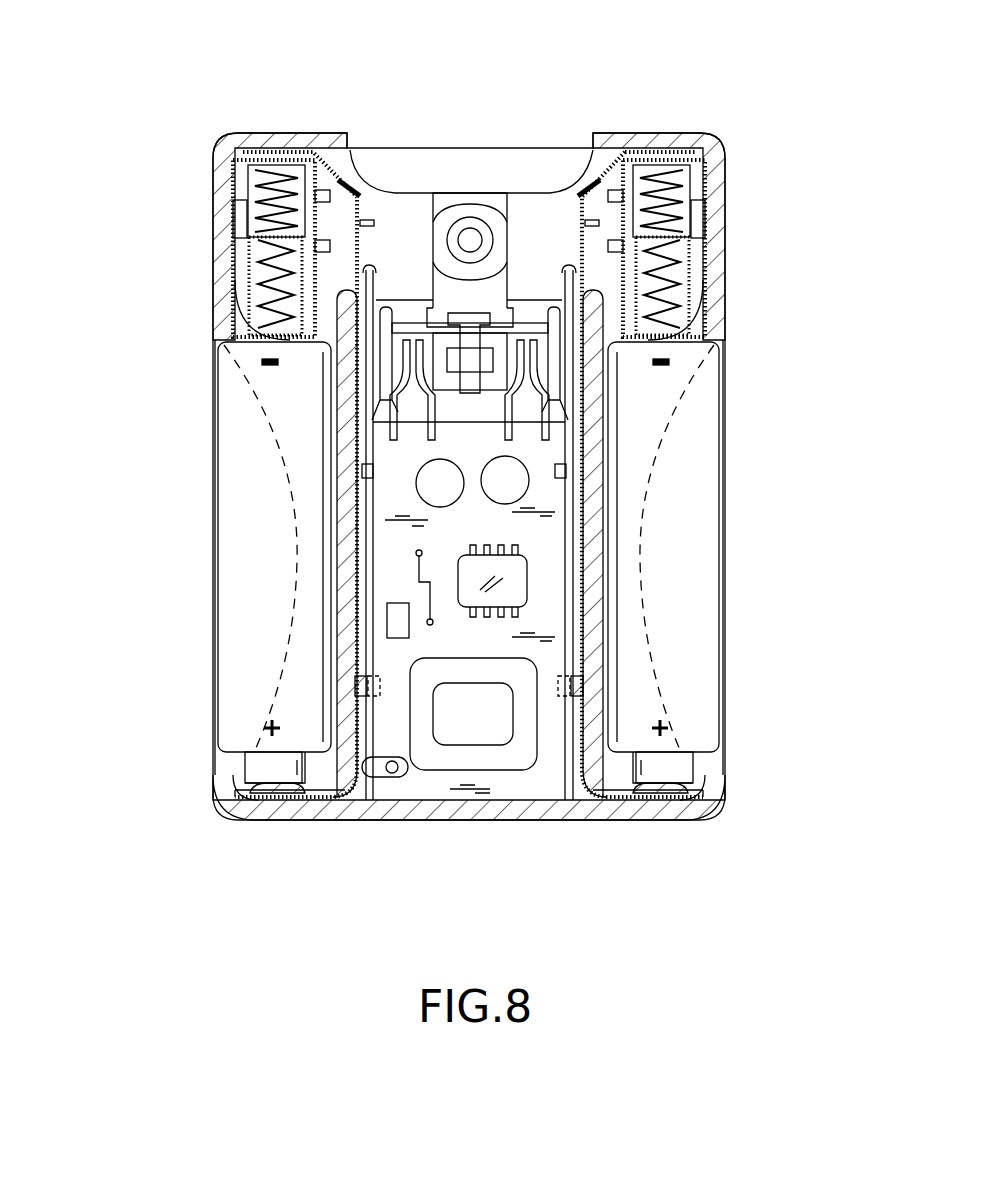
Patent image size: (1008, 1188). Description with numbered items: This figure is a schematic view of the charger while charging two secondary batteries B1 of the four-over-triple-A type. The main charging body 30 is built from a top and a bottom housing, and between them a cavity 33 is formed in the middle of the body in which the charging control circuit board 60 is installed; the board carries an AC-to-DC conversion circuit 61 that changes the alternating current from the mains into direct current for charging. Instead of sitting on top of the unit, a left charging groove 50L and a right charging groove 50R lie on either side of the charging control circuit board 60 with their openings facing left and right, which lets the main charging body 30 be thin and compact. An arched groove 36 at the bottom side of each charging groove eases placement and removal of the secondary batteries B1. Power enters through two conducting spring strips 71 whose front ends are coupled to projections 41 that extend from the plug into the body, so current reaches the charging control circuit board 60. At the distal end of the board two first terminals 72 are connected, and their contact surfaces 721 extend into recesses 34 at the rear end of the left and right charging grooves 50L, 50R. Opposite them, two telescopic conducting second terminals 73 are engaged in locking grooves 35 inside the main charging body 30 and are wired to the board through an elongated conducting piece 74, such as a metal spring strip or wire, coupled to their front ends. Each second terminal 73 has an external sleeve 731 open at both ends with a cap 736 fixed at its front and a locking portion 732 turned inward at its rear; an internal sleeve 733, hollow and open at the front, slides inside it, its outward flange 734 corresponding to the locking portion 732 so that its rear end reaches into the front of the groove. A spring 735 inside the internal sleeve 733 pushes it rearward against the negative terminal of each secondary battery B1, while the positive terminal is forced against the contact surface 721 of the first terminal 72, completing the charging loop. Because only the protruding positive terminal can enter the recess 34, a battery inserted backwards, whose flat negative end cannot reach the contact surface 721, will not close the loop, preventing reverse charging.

The main charging body 30 is at (266, 110).
The cavity 33 is at (580, 522).
The recess 34 is at (722, 800).
The locking groove 35 is at (237, 212).
The arched groove 36 is at (245, 420).
The projection 41 is at (410, 345).
The left charging groove 50L is at (182, 503).
The right charging groove 50R is at (760, 503).
The charging control circuit board 60 is at (552, 615).
The AC-to-DC conversion circuit 61 is at (520, 692).
The conducting spring strip 71 is at (237, 262).
The first terminal 72 is at (327, 807).
The contact surface 721 is at (255, 800).
The second terminal 73 is at (232, 316).
The external sleeve 731 is at (710, 223).
The locking portion 732 is at (710, 262).
The internal sleeve 733 is at (706, 322).
The outward flange 734 is at (700, 288).
The spring 735 is at (710, 185).
The cap 736 is at (700, 137).
The elongated conducting piece 74 is at (330, 157).
The secondary battery B1 is at (240, 643).